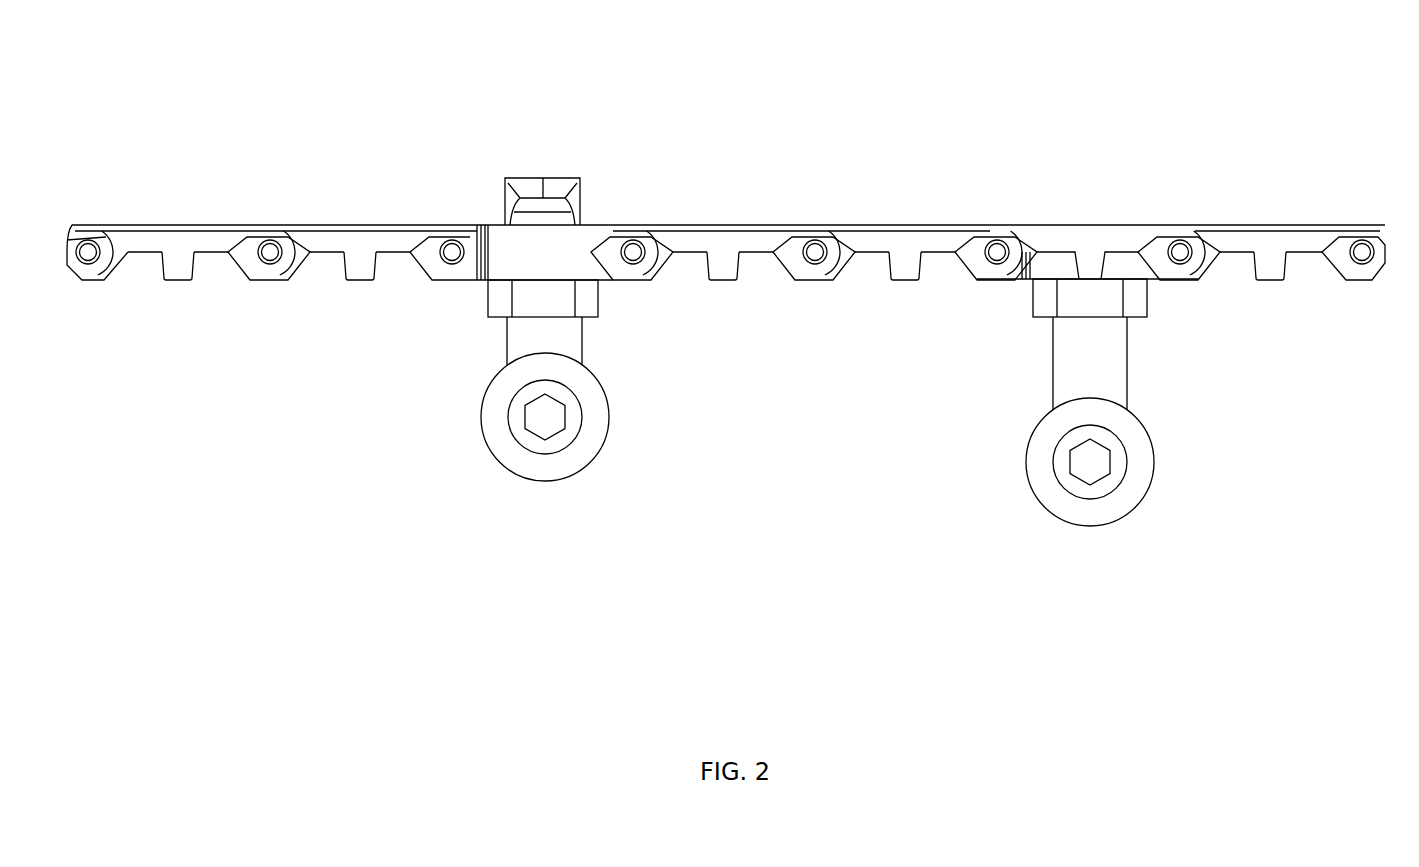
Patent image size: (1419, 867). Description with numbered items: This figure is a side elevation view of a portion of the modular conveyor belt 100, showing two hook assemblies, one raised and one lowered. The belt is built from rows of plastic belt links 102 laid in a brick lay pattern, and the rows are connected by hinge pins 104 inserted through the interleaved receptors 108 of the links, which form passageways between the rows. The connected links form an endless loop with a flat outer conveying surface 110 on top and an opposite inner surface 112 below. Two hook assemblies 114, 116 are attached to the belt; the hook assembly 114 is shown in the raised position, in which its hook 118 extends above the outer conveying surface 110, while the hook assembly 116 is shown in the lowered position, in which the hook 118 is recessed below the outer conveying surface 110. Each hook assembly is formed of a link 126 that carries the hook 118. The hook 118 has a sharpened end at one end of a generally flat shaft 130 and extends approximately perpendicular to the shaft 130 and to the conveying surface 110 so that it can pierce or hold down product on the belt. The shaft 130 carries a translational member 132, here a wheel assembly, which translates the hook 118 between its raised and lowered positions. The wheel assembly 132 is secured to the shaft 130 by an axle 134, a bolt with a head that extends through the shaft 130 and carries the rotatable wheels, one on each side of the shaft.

The modular conveyor belt 100 is at (1186, 134).
The belt link 102 is at (863, 238).
The hinge pin 104 is at (445, 255).
The receptor 108 is at (795, 255).
The outer conveying surface 110 is at (907, 176).
The inner surface 112 is at (888, 354).
The hook assembly 114 is at (502, 222).
The hook assembly 116 is at (1042, 283).
The hook 118 is at (557, 192).
The link 126 is at (512, 253).
The shaft 130 is at (518, 333).
The translational member 132 is at (570, 437).
The axle 134 is at (543, 417).